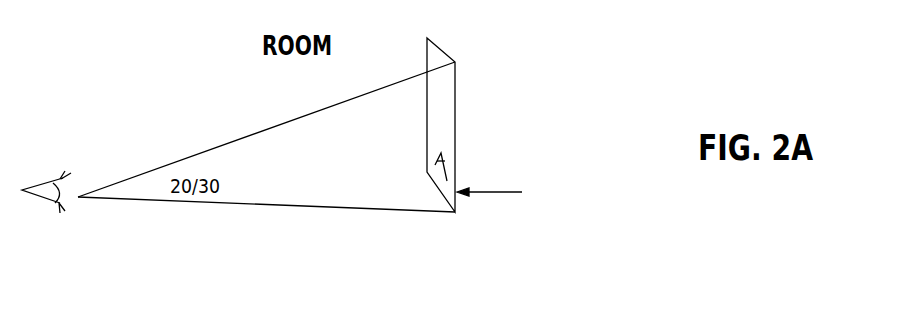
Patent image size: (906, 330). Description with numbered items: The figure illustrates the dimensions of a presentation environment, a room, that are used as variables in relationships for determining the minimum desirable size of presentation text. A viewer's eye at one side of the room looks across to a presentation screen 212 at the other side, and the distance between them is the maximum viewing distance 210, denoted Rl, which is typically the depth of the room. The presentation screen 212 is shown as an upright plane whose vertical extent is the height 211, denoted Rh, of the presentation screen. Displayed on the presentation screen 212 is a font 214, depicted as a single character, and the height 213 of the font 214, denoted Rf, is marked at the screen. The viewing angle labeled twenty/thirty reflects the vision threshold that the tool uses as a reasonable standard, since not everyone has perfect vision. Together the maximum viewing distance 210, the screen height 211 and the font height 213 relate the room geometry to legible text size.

The maximum viewing distance 210 is at (245, 238).
The height of the presentation screen 211 is at (502, 137).
The presentation screen 212 is at (455, 80).
The height of the font 213 is at (568, 190).
The font 214 is at (433, 163).